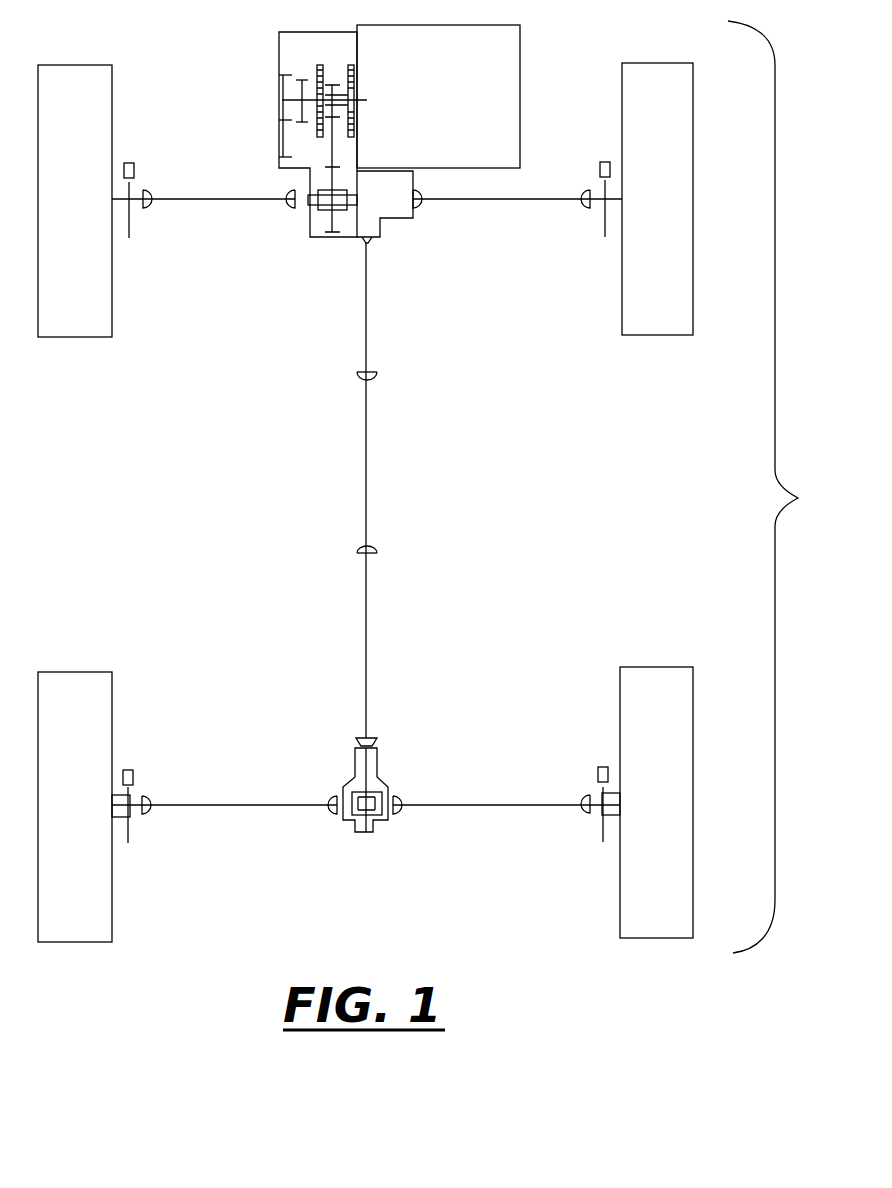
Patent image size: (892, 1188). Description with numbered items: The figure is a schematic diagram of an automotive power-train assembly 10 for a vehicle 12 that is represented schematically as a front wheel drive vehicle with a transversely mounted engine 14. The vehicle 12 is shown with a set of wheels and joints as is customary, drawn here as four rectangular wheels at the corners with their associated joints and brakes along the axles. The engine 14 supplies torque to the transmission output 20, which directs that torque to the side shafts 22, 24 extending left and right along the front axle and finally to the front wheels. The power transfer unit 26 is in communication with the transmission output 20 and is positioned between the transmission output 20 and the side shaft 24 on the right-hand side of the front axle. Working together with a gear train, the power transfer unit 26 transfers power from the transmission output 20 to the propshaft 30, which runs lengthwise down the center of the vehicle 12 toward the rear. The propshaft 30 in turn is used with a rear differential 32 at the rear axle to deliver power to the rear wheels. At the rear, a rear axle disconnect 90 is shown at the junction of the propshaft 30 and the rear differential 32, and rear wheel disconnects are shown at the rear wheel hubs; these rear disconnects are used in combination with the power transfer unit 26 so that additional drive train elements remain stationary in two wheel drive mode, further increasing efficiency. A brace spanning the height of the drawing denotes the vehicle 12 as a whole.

The automotive power-train assembly 10 is at (427, 576).
The vehicle 12 is at (785, 487).
The engine 14 is at (452, 104).
The transmission output 20 is at (335, 200).
The side shaft 22 is at (199, 199).
The side shaft 24 is at (552, 197).
The power transfer unit 26 is at (397, 239).
The propshaft 30 is at (365, 662).
The rear differential 32 is at (390, 824).
The rear axle disconnect 90 is at (378, 758).